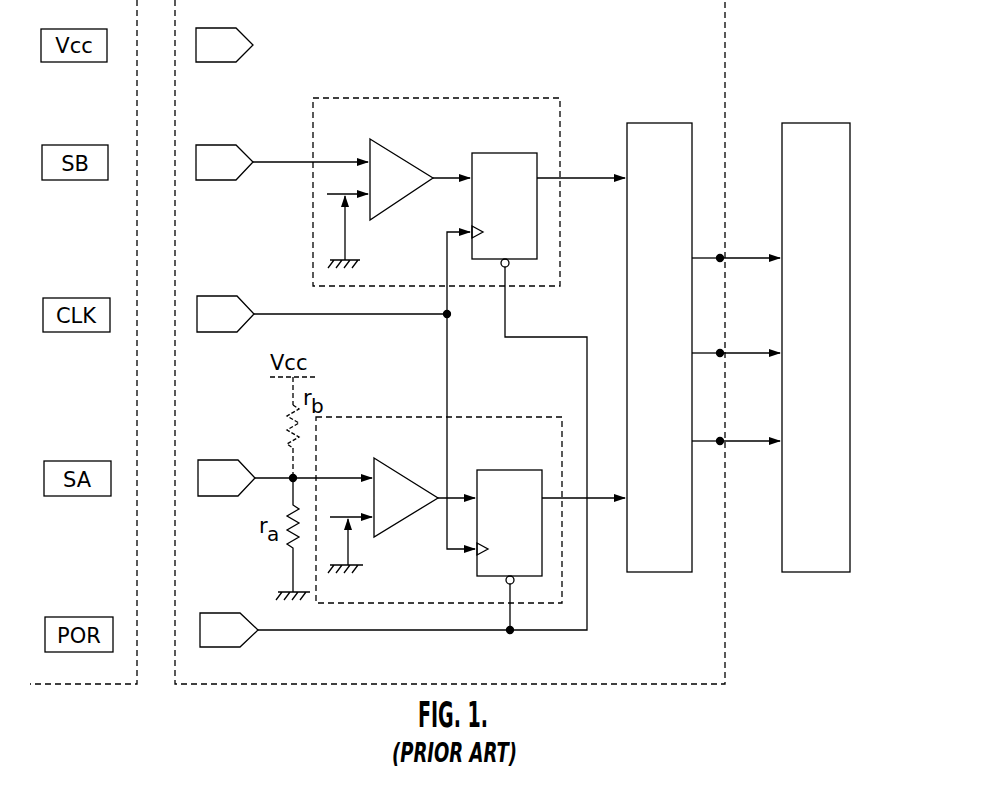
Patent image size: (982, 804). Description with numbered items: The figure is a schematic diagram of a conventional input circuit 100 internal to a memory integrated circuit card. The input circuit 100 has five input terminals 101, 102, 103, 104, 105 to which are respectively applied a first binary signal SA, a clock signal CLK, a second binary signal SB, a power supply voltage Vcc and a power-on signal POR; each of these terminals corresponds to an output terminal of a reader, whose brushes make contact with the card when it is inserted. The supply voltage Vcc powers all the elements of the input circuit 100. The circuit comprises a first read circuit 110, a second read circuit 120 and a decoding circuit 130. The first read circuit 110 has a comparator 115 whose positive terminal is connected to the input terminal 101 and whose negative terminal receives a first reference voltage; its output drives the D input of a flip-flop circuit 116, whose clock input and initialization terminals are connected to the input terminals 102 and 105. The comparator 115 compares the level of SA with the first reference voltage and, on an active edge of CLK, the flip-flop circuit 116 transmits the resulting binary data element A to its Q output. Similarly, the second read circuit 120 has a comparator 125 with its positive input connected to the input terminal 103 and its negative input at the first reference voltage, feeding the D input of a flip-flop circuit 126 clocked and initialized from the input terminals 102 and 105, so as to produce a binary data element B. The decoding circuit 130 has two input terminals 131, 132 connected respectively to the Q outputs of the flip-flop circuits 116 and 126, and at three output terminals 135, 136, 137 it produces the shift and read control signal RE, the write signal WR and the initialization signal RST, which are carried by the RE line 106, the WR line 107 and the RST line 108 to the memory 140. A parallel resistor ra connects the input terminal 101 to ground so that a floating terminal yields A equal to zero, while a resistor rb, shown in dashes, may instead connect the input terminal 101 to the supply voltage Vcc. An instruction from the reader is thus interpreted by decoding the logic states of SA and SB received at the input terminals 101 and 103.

The input circuit 100 is at (725, 666).
The input terminal 101 is at (218, 460).
The input terminal 102 is at (217, 296).
The input terminal 103 is at (238, 147).
The input terminal 104 is at (237, 30).
The input terminal 105 is at (212, 613).
The read enable RE line 106 is at (720, 258).
The write enable WR line 107 is at (720, 353).
The reset RST line 108 is at (720, 441).
The first read circuit 110 is at (360, 417).
The comparator 115 is at (398, 468).
The flip-flop circuit 116 is at (497, 469).
The second read circuit 120 is at (390, 98).
The comparator 125 is at (390, 143).
The flip-flop circuit 126 is at (487, 152).
The decoding circuit 130 is at (648, 123).
The input terminal 131 is at (625, 496).
The input terminal 132 is at (625, 176).
The output terminal 135 is at (693, 256).
The output terminal 136 is at (693, 351).
The output terminal 137 is at (693, 439).
The memory 140 is at (806, 123).